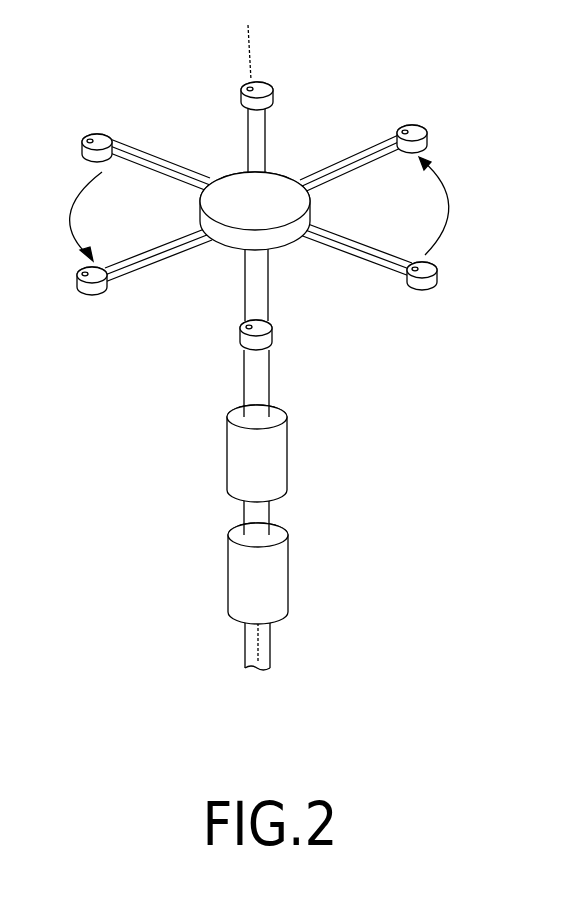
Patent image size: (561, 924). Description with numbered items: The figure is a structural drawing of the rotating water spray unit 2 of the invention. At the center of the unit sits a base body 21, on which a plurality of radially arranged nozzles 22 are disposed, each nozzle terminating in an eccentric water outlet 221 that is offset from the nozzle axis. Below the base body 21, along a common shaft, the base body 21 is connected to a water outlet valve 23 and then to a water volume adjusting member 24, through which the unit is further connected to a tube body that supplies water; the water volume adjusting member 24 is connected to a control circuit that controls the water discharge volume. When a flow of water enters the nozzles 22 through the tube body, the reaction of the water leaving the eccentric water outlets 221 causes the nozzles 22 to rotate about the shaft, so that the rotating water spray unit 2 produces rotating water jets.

The rotating water spray unit 2 is at (273, 353).
The base body 21 is at (222, 244).
The nozzle 22 is at (103, 128).
The eccentric water outlet 221 is at (87, 130).
The water outlet valve 23 is at (237, 452).
The water volume adjusting member 24 is at (238, 578).